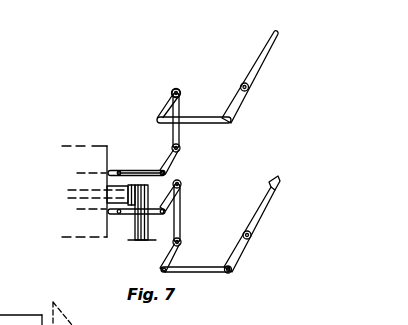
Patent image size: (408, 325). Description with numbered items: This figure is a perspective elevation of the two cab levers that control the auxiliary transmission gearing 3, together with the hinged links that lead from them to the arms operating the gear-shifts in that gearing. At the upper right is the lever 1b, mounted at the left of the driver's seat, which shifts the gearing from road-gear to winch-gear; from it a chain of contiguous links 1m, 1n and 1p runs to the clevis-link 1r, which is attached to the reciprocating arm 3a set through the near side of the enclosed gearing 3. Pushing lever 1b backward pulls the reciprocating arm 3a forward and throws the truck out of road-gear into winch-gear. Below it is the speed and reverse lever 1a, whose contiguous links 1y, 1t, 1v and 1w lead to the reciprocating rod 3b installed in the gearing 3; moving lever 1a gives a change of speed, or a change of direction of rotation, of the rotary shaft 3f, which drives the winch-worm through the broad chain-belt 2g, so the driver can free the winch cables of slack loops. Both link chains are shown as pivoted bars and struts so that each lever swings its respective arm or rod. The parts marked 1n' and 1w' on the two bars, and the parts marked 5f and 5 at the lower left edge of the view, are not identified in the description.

The auxiliary transmission gearing 3 is at (94, 147).
The reciprocating arm 3a is at (119, 169).
The reciprocating rod 3b is at (115, 216).
The rotary shaft 3f is at (100, 199).
The broad chain-belt 2g is at (132, 240).
The upper bar 1n' is at (140, 138).
The link 1n is at (156, 80).
The link 1m is at (193, 118).
The link 1p is at (180, 128).
The clevis-link 1r is at (173, 160).
The lever 1b is at (268, 43).
The link 1w is at (197, 196).
The lower bar 1w' is at (136, 244).
The link 1v is at (180, 214).
The link 1t is at (172, 256).
The link 1y is at (226, 277).
The speed and reverse lever 1a is at (265, 198).
The adjacent figure element 5f is at (0, 315).
The adjacent figure element 5 is at (73, 313).